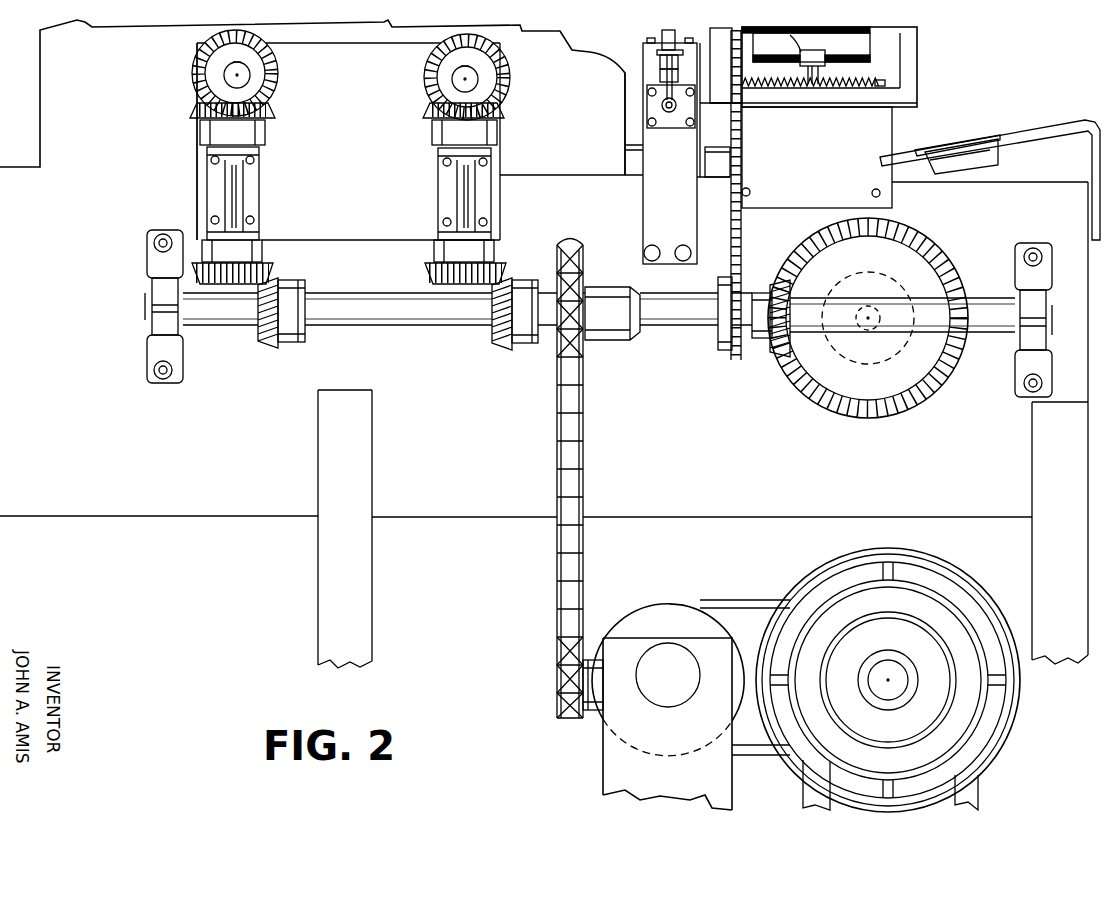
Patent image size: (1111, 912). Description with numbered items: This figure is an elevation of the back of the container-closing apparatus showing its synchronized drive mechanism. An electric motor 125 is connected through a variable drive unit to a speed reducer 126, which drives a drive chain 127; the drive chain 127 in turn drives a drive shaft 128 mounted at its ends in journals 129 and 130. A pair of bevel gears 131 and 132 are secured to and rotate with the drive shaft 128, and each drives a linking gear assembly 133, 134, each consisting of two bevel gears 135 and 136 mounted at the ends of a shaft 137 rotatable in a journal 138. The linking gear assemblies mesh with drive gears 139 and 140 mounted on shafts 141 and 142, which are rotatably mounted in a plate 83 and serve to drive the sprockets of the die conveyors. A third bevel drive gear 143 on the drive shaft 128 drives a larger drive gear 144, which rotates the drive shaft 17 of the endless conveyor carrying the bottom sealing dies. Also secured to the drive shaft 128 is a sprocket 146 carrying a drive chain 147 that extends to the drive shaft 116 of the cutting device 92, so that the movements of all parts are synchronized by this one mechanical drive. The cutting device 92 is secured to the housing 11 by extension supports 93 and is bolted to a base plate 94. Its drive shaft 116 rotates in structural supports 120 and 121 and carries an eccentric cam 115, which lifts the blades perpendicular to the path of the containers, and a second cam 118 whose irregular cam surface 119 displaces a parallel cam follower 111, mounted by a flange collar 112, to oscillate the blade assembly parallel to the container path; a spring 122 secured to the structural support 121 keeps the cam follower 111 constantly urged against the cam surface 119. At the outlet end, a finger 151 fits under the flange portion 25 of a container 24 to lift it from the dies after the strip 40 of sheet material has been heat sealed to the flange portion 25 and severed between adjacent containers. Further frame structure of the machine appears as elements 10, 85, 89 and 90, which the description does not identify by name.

The frame post 10 is at (360, 555).
The housing 11 is at (228, 516).
The drive shaft 17 is at (857, 334).
The container 24 is at (1000, 152).
The flange portion 25 is at (986, 138).
The strip of sheet material 40 is at (700, 152).
The plate 83 is at (199, 193).
The frame housing 85 is at (50, 70).
The column 89 is at (652, 66).
The adjusting mechanism 90 is at (660, 35).
The cutting device 92 is at (919, 48).
The extension support 93 is at (880, 132).
The base plate 94 is at (908, 99).
The parallel cam follower 111 is at (828, 60).
The flange collar 112 is at (808, 86).
The eccentric cam 115 is at (862, 38).
The drive shaft 116 is at (748, 36).
The second cam 118 is at (792, 41).
The cam surface 119 is at (826, 40).
The structural support 120 is at (910, 75).
The structural support 121 is at (718, 75).
The spring 122 is at (822, 89).
The electric motor 125 is at (820, 608).
The speed reducer 126 is at (655, 604).
The drive chain 127 is at (558, 402).
The drive shaft 128 is at (547, 318).
The journal 129 is at (152, 281).
The journal 130 is at (1036, 340).
The bevel gear 131 is at (293, 292).
The bevel gear 132 is at (500, 276).
The linking gear assembly 133 is at (257, 148).
The linking gear assembly 134 is at (437, 162).
The bevel gear 135 is at (265, 270).
The bevel gear 136 is at (272, 110).
The shaft 137 is at (233, 185).
The journal 138 is at (248, 201).
The drive gear 139 is at (250, 72).
The drive gear 140 is at (445, 96).
The shaft 141 is at (278, 58).
The shaft 142 is at (455, 72).
The third bevel drive gear 143 is at (768, 342).
The larger drive gear 144 is at (802, 383).
The sprocket 146 is at (722, 343).
The drive chain 147 is at (730, 360).
The finger 151 is at (1045, 126).